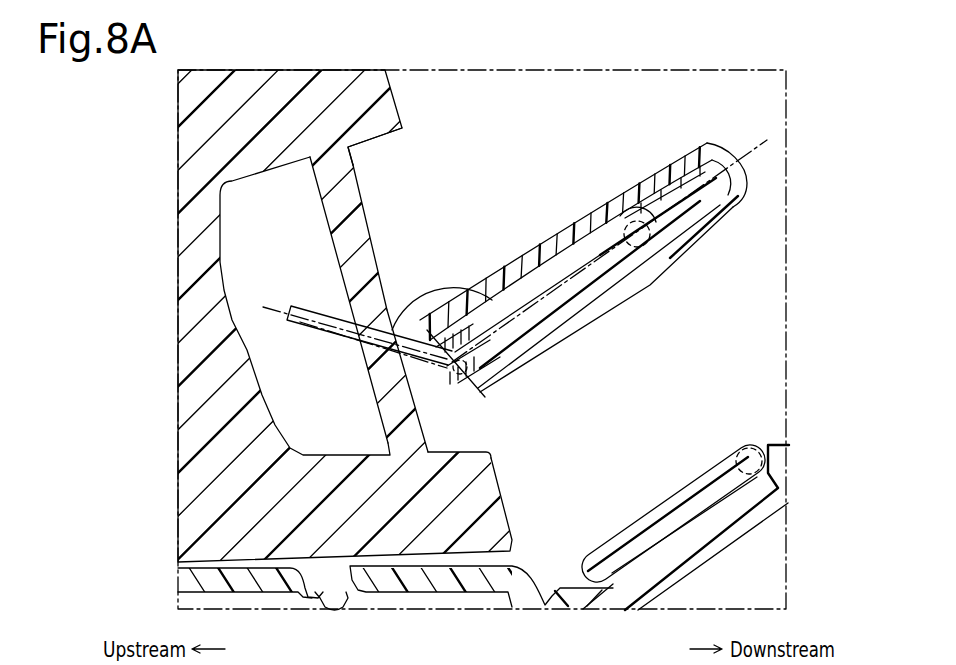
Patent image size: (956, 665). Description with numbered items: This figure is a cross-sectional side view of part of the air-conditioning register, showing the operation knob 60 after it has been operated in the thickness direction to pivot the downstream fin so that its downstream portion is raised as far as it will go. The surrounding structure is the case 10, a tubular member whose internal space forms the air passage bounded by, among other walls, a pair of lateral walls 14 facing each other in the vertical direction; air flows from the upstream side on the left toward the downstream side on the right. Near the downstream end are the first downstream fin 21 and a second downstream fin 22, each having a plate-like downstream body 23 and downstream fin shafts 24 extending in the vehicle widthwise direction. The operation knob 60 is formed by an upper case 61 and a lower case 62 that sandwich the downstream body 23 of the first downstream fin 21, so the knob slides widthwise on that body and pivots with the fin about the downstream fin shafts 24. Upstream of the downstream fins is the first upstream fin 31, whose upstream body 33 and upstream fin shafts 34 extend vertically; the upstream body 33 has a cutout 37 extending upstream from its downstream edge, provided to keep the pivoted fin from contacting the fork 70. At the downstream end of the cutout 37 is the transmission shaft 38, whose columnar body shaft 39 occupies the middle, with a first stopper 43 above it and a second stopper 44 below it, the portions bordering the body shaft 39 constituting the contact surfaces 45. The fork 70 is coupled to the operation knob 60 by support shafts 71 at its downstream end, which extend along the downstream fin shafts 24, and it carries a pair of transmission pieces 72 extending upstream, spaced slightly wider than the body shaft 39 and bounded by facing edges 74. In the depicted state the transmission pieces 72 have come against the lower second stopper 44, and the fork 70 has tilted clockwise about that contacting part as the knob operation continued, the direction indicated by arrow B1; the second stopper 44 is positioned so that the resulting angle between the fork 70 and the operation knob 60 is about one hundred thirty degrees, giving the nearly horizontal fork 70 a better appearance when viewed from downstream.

The case 10 is at (481, 615).
The lateral walls 14 is at (570, 607).
The first downstream fin 21 is at (565, 264).
The second downstream fins 22 is at (660, 513).
The downstream body 23 is at (620, 375).
The downstream fin shafts 24 is at (632, 248).
The first upstream fin 31 is at (478, 311).
The upstream body 33 is at (188, 152).
The upstream fin shafts 34 is at (350, 607).
The cutout 37 is at (187, 253).
The transmission shaft 38 is at (391, 255).
The columnar body shaft 39 is at (366, 262).
The first stopper 43 is at (348, 164).
The second stopper 44 is at (424, 437).
The contact surfaces 45 is at (328, 237).
The operation knob 60 is at (597, 371).
The upper case 61 is at (606, 206).
The lower case 62 is at (582, 321).
The fork 70 is at (353, 292).
The support shafts 71 is at (500, 391).
The transmission pieces 72 is at (308, 304).
The facing edges 74 is at (313, 342).
The direction B1 is at (479, 402).